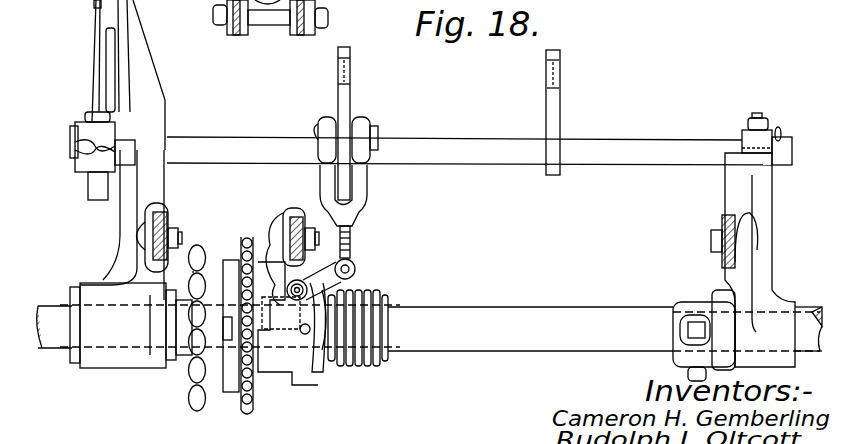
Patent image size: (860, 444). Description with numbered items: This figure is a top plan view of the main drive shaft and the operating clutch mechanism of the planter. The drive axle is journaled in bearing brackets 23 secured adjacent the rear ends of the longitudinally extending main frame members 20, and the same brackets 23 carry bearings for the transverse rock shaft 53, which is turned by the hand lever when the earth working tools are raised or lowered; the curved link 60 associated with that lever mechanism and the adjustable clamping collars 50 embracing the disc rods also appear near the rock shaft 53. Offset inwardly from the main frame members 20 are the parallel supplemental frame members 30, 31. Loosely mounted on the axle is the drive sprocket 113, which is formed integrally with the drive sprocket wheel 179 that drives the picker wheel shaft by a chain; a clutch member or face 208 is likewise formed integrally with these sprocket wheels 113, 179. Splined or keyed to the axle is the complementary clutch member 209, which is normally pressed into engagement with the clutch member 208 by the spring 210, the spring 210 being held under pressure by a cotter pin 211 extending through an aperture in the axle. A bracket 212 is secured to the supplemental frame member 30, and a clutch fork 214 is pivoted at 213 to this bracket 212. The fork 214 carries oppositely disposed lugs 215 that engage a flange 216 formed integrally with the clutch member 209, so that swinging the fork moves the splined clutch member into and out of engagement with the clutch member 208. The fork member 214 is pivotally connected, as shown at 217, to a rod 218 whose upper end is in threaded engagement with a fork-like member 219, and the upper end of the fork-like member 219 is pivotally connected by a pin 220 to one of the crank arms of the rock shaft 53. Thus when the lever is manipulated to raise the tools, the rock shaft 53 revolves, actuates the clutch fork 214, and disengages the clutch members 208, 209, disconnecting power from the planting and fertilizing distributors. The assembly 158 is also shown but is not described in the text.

The main frame members 20 is at (168, 220).
The bearing brackets 23 is at (125, 262).
The supplemental frame member 30 is at (309, 214).
The supplemental frame member 31 is at (720, 224).
The adjustable clamping collars 50 is at (350, 65).
The rock shaft 53 is at (601, 140).
The curved link 60 is at (152, 80).
The drive sprocket 113 is at (189, 402).
The bolt assembly 158 is at (213, 12).
The drive sprocket wheel 179 is at (245, 414).
The clutch member 208 is at (255, 372).
The clutch member 209 is at (292, 380).
The spring 210 is at (350, 368).
The cotter pin 211 is at (385, 300).
The bracket 212 is at (276, 228).
The pivot 213 is at (345, 288).
The clutch fork 214 is at (346, 260).
The lugs 215 is at (303, 334).
The flange 216 is at (316, 373).
The pivotal connection 217 is at (353, 266).
The rod 218 is at (355, 228).
The fork-like member 219 is at (367, 190).
The pin 220 is at (376, 134).